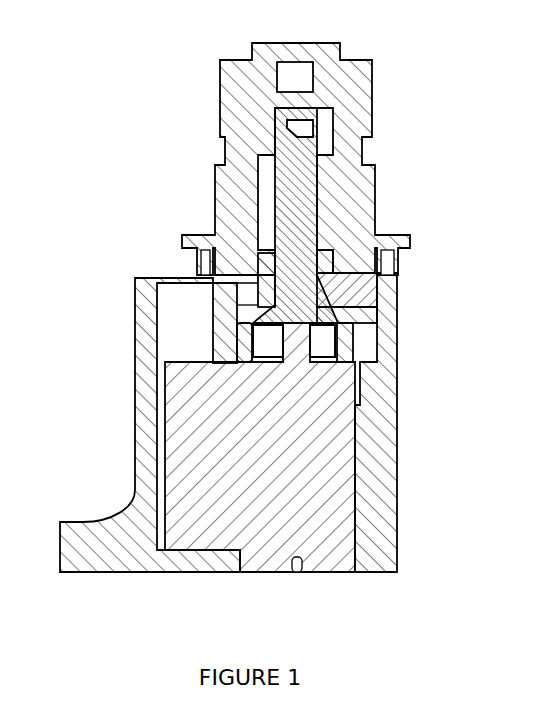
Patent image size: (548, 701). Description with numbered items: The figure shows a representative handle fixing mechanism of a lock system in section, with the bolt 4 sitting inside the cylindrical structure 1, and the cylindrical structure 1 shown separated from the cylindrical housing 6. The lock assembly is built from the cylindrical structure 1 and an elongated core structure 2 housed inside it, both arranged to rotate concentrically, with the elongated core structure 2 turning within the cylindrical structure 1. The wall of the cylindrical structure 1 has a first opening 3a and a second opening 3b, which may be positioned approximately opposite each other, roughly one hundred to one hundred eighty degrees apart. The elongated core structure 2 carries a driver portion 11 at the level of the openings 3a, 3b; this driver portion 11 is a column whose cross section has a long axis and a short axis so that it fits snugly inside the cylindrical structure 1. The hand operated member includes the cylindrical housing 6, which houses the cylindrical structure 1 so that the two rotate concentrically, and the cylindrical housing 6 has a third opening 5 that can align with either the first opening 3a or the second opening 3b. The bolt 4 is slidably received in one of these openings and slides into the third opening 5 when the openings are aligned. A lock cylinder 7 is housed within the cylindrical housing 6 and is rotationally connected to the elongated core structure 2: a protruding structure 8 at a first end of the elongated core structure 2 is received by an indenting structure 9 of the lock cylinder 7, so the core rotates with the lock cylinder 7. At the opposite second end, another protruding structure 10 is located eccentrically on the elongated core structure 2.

The cylindrical structure 1 is at (235, 193).
The elongated core structure 2 is at (300, 198).
The first opening 3a is at (235, 293).
The second opening 3b is at (347, 272).
The bolt 4 is at (320, 281).
The third opening 5 is at (392, 292).
The cylindrical housing 6 is at (370, 429).
The lock cylinder 7 is at (293, 508).
The protruding structure 8 is at (250, 340).
The indenting structure 9 is at (318, 357).
The protruding structure 10 is at (293, 127).
The driver portion 11 is at (203, 275).